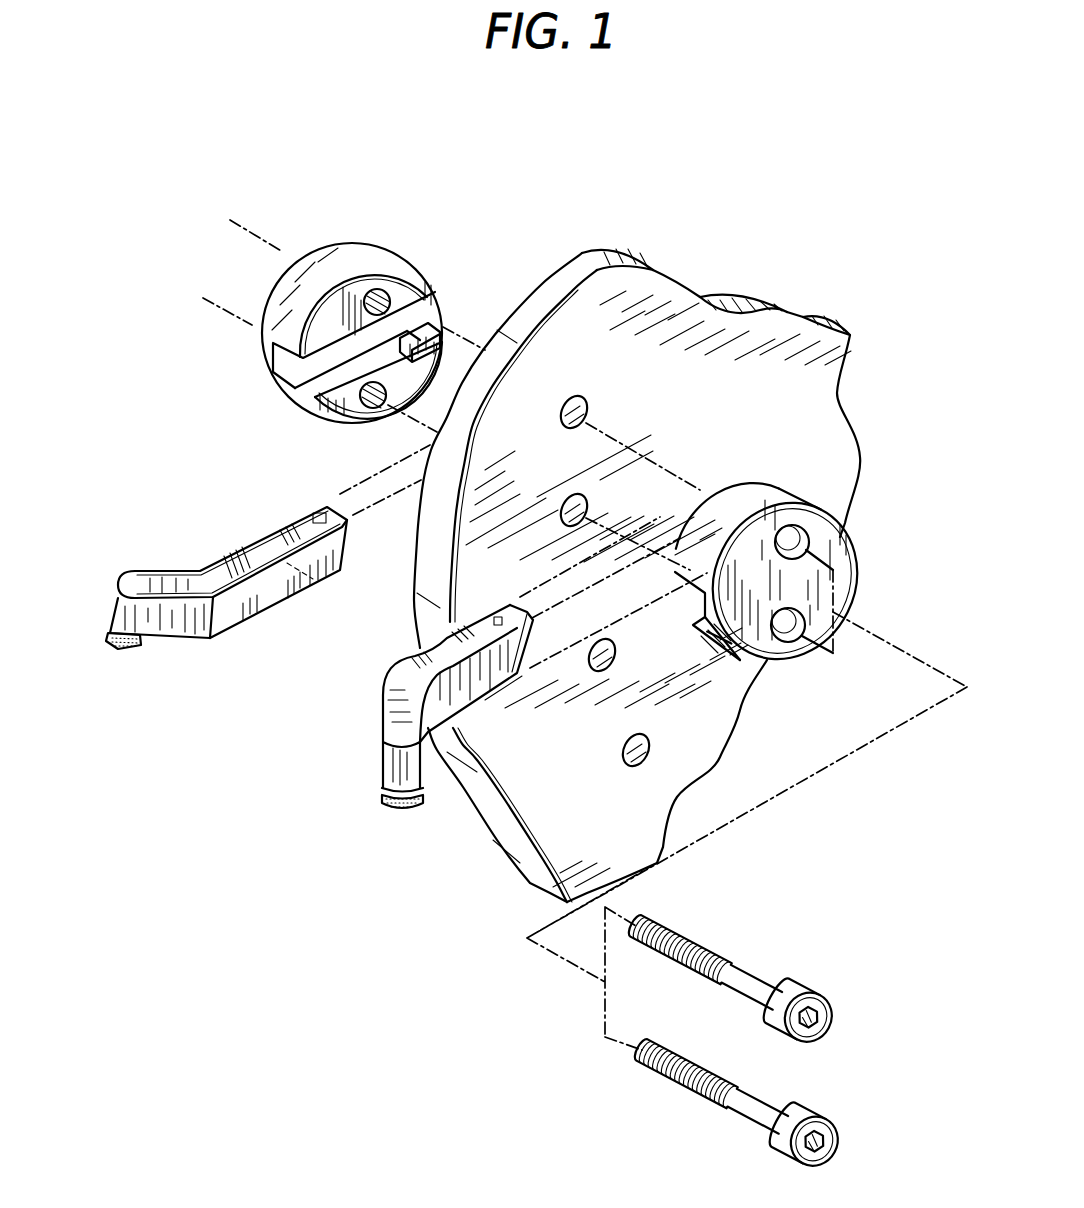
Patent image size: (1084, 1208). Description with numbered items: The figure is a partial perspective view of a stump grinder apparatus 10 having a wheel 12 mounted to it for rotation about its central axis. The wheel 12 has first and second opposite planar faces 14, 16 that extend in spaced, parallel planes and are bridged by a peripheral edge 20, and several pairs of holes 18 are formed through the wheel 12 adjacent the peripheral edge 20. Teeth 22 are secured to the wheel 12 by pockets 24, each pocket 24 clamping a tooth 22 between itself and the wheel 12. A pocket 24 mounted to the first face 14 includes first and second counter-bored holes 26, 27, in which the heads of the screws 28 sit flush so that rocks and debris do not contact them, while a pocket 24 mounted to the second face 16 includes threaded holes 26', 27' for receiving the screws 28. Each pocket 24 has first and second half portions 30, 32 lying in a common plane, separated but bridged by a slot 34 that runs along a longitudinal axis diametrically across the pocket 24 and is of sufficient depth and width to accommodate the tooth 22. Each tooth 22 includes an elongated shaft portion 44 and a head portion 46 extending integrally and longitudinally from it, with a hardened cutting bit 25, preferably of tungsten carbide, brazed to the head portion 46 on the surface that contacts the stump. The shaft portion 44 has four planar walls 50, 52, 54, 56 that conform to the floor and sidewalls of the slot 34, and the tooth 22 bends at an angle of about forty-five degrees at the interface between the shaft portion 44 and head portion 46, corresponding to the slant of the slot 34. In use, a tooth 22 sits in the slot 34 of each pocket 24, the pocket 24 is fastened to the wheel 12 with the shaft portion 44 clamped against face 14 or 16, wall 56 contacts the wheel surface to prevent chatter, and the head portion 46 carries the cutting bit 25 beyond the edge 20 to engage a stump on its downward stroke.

The stump grinder apparatus 10 is at (725, 268).
The wheel 12 is at (815, 400).
The first planar face 14 is at (676, 770).
The second planar face 16 is at (503, 860).
The holes 18 is at (595, 411).
The peripheral edge 20 is at (560, 275).
The tooth 22 is at (205, 642).
The pocket 24 is at (358, 240).
The cutting bit 25 is at (118, 652).
The first counter-bored hole 26 is at (840, 532).
The first threaded hole 26' is at (431, 278).
The second counter-bored hole 27 is at (803, 663).
The second threaded hole 27' is at (339, 425).
The screw 28 is at (752, 972).
The first half portion 30 is at (330, 322).
The second half portion 32 is at (338, 410).
The slot 34 is at (290, 367).
The shaft portion 44 is at (283, 585).
The head portion 46 is at (150, 582).
The planar wall 50 is at (258, 550).
The planar wall 52 is at (245, 610).
The planar wall 54 is at (341, 572).
The planar wall 56 is at (219, 546).